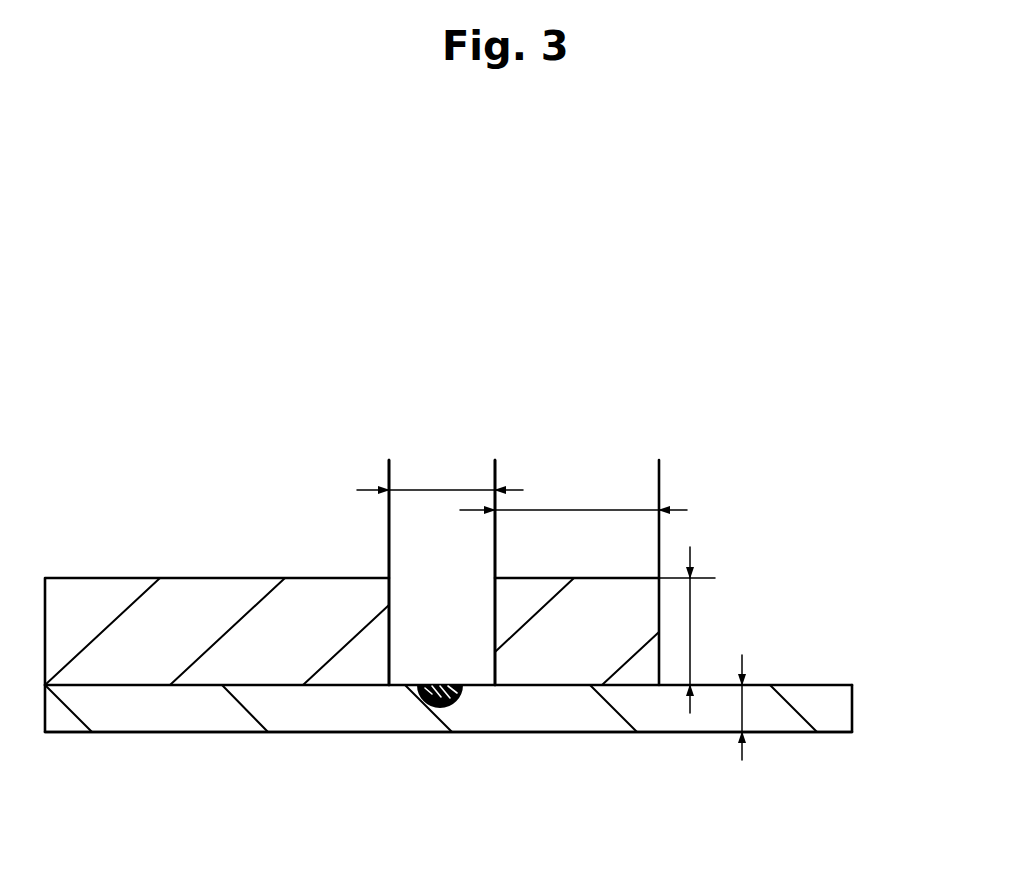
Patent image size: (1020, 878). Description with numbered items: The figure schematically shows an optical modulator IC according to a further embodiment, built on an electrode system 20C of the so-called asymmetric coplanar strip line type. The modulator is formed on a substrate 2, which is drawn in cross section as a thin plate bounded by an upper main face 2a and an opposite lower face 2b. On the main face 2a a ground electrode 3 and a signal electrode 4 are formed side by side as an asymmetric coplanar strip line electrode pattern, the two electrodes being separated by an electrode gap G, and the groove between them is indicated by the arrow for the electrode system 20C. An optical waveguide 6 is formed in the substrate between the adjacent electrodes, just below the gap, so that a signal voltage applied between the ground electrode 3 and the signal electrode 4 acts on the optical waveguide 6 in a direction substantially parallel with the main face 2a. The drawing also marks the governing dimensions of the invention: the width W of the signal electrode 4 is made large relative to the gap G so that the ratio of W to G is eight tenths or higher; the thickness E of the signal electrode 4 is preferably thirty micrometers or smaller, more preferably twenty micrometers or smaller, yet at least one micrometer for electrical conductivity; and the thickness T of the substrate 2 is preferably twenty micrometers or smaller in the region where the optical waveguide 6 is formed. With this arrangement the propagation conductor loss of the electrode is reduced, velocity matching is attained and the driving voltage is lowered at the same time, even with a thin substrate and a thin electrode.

The optical modulator IC is at (481, 621).
The substrate 2 is at (840, 718).
The main face of the substrate 2a is at (755, 683).
The lower surface of substrate 2b is at (793, 733).
The ground electrode 3 is at (162, 597).
The signal electrode 4 is at (557, 653).
The optical waveguide 6 is at (436, 706).
The electrode system 20C is at (350, 548).
The electrode gap G is at (435, 488).
The width of the signal electrode W is at (570, 510).
The thickness of the signal electrode E is at (692, 618).
The thickness of the substrate T is at (734, 703).